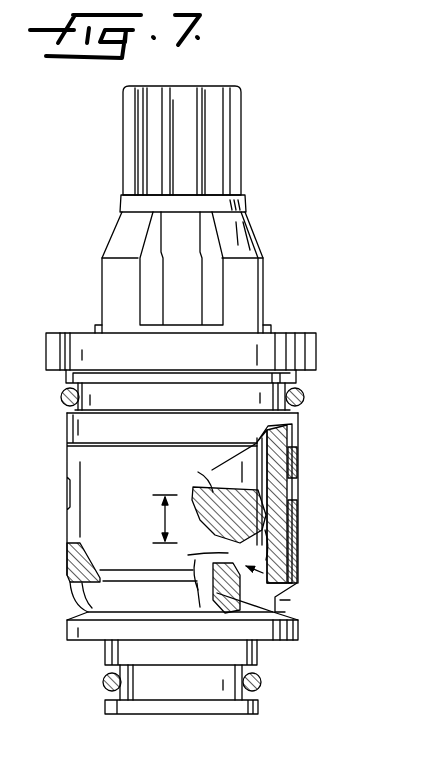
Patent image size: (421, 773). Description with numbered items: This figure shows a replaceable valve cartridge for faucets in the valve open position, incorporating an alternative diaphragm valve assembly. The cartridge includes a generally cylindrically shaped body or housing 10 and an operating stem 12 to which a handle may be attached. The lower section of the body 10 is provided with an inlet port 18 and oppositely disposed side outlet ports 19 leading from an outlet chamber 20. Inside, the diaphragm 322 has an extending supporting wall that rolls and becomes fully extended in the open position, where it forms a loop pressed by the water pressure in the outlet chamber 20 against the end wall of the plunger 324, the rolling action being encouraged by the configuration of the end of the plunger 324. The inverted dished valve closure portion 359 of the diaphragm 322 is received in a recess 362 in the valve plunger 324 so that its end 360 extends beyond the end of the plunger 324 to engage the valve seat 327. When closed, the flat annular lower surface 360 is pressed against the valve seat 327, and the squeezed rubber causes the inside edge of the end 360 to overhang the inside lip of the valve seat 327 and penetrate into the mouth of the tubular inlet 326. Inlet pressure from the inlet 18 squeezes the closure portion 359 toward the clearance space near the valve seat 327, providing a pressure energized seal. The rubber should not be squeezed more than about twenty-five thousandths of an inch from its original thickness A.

The body 10 is at (291, 324).
The operating stem 12 is at (250, 136).
The inlet port 18 is at (280, 603).
The side outlet ports 19 is at (283, 593).
The outlet chamber 20 is at (293, 578).
The diaphragm 322 is at (193, 487).
The valve plunger 324 is at (289, 432).
The tubular inlet 326 is at (247, 640).
The valve seat 327 is at (222, 563).
The valve closure portion 359 is at (209, 460).
The end of the valve closure portion 360 is at (292, 556).
The recess 362 is at (295, 496).
The original thickness A is at (154, 519).